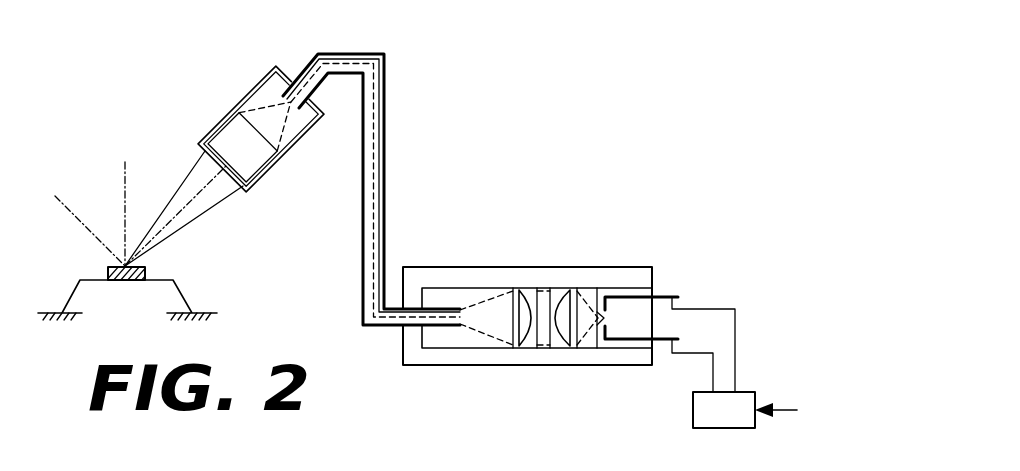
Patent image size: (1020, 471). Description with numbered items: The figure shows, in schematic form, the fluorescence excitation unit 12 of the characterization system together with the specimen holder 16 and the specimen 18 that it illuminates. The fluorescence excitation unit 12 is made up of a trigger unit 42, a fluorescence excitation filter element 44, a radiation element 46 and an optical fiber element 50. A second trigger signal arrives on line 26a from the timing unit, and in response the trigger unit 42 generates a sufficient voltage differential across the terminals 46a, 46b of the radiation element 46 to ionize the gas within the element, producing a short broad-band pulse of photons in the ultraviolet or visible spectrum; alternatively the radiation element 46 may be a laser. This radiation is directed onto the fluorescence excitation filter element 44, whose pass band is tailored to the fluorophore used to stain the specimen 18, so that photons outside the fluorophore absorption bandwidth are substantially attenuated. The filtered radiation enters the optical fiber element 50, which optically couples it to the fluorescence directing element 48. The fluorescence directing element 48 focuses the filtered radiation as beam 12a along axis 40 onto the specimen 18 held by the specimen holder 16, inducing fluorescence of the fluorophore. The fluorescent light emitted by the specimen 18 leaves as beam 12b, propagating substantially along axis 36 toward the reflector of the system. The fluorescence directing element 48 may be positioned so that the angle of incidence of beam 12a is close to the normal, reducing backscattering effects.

The fluorescence excitation unit 12 is at (579, 152).
The beam 12a is at (191, 177).
The beam 12b is at (58, 197).
The specimen holder 16 is at (80, 282).
The specimen 18 is at (108, 273).
The axis 36 is at (124, 166).
The axis 40 is at (203, 193).
The trigger unit 42 is at (737, 419).
The fluorescence excitation filter element 44 is at (533, 292).
The radiation element 46 is at (631, 296).
The terminal 46a is at (674, 296).
The terminal 46b is at (695, 355).
The fluorescence directing element 48 is at (246, 95).
The optical fiber element 50 is at (386, 134).
The line 26a is at (783, 408).